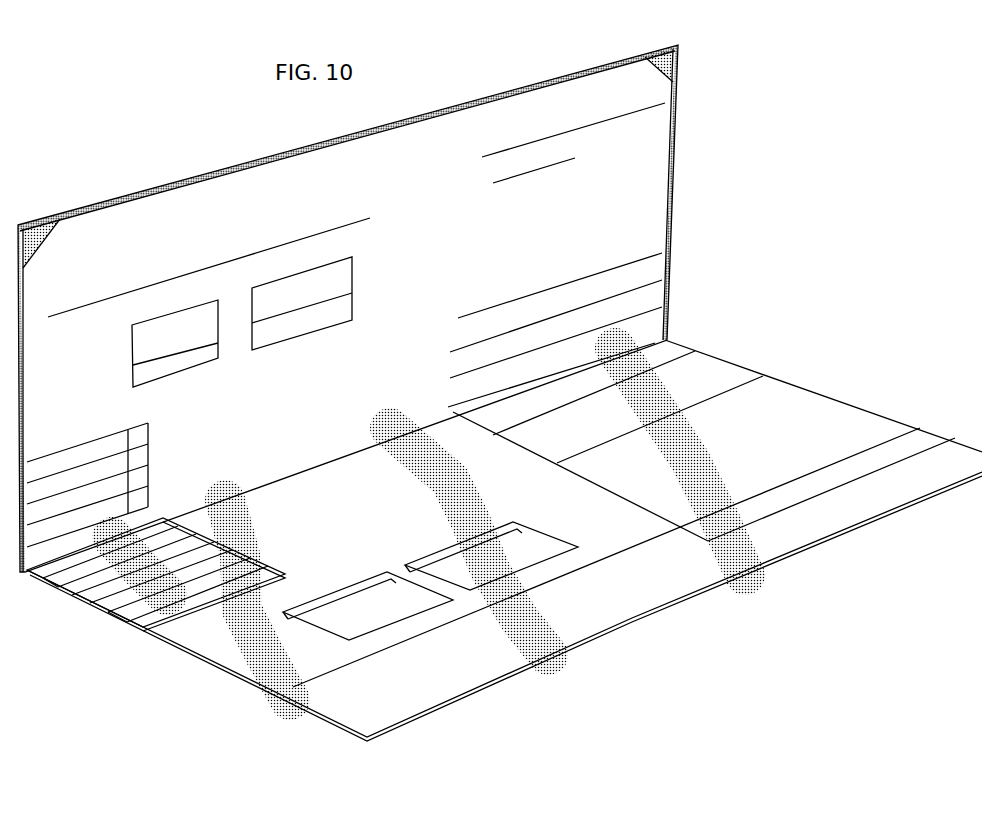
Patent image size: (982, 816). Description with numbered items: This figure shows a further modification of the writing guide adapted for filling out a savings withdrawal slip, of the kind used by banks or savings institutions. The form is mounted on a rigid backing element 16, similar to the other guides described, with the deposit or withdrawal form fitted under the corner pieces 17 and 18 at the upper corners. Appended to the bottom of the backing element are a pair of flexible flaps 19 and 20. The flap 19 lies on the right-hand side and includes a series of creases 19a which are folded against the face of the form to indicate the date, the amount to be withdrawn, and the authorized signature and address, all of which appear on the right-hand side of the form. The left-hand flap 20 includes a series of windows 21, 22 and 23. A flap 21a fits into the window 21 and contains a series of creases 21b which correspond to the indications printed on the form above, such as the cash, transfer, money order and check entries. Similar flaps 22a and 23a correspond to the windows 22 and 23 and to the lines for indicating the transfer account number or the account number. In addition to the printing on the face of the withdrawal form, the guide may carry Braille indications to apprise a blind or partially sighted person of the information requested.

The rigid backing element 16 is at (210, 172).
The corner piece 17 is at (680, 62).
The corner piece 18 is at (38, 228).
The flexible flap 19 is at (687, 356).
The creases 19a is at (733, 369).
The flexible flap 20 is at (228, 662).
The window 21 is at (260, 568).
The flap 21a is at (116, 606).
The creases 21b is at (47, 578).
The window 22 is at (345, 630).
The flap 22a is at (330, 602).
The window 23 is at (540, 552).
The flap 23a is at (440, 555).